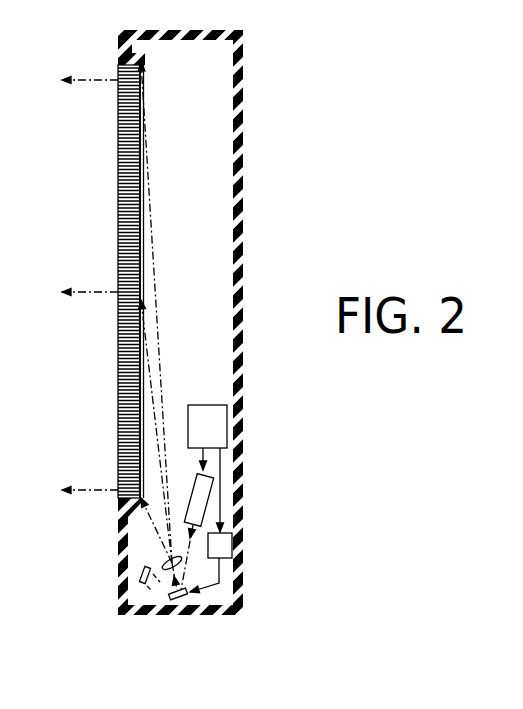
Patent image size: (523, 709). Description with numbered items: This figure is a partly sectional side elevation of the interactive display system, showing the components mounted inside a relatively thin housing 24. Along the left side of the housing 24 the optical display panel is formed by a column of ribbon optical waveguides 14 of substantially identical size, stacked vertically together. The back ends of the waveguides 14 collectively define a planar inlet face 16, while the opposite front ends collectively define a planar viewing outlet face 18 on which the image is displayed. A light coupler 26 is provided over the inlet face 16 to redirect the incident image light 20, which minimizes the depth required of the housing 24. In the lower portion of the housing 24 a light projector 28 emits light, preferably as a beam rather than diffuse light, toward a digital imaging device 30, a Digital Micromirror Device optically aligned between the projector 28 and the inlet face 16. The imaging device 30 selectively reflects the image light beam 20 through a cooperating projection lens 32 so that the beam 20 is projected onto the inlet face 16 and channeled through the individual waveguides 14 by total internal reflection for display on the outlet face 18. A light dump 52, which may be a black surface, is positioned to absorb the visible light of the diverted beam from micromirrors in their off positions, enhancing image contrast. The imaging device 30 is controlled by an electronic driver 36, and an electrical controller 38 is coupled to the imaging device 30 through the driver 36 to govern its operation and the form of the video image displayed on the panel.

The ribbon optical waveguides 14 is at (118, 167).
The inlet face 16 is at (139, 212).
The viewing outlet face 18 is at (118, 220).
The image light beam 20 is at (155, 284).
The housing 24 is at (244, 92).
The light coupler 26 is at (145, 104).
The light projector 28 is at (204, 506).
The digital imaging device 30 is at (178, 600).
The projection lens 32 is at (168, 560).
The electronic driver 36 is at (232, 546).
The electrical controller 38 is at (228, 432).
The light dump 52 is at (140, 578).